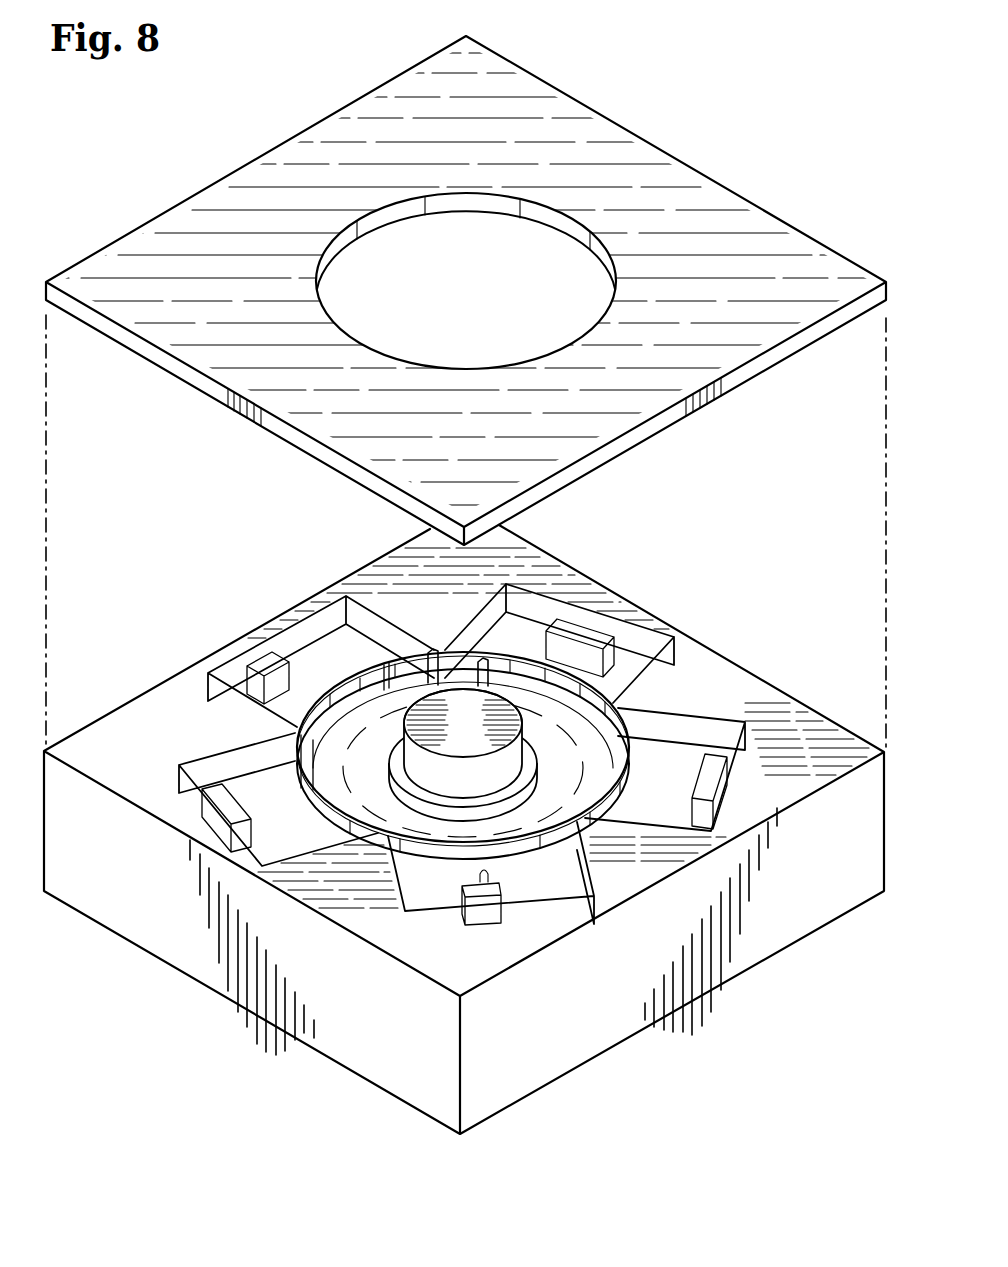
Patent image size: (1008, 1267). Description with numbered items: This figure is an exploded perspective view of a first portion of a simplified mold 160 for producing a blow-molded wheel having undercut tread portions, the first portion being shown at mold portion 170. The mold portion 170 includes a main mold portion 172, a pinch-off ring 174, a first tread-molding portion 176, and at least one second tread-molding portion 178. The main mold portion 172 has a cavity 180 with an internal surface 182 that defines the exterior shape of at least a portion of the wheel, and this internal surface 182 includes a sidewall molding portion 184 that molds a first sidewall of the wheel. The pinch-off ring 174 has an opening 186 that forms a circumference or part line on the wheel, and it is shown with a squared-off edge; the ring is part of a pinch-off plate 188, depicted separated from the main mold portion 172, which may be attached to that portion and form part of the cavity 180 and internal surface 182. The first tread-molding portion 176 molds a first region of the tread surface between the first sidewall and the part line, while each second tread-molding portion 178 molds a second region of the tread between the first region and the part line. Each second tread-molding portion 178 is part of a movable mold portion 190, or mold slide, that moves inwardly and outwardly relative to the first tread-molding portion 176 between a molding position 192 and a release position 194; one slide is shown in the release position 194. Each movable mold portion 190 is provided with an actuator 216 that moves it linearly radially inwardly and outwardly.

The simplified mold 160 is at (162, 100).
The first mold portion 170 is at (186, 146).
The main mold portion 172 is at (812, 912).
The pinch-off ring 174 is at (383, 205).
The first tread-molding portion 176 is at (365, 712).
The second tread-molding portion 178 is at (482, 684).
The cavity 180 is at (586, 736).
The internal surface 182 is at (572, 710).
The sidewall molding portion 184 is at (578, 808).
The opening 186 is at (572, 335).
The pinch-off plate 188 is at (687, 178).
The movable mold portion 190 is at (413, 652).
The molding position 192 is at (517, 642).
The release position 194 is at (294, 706).
The actuator 216 is at (265, 676).